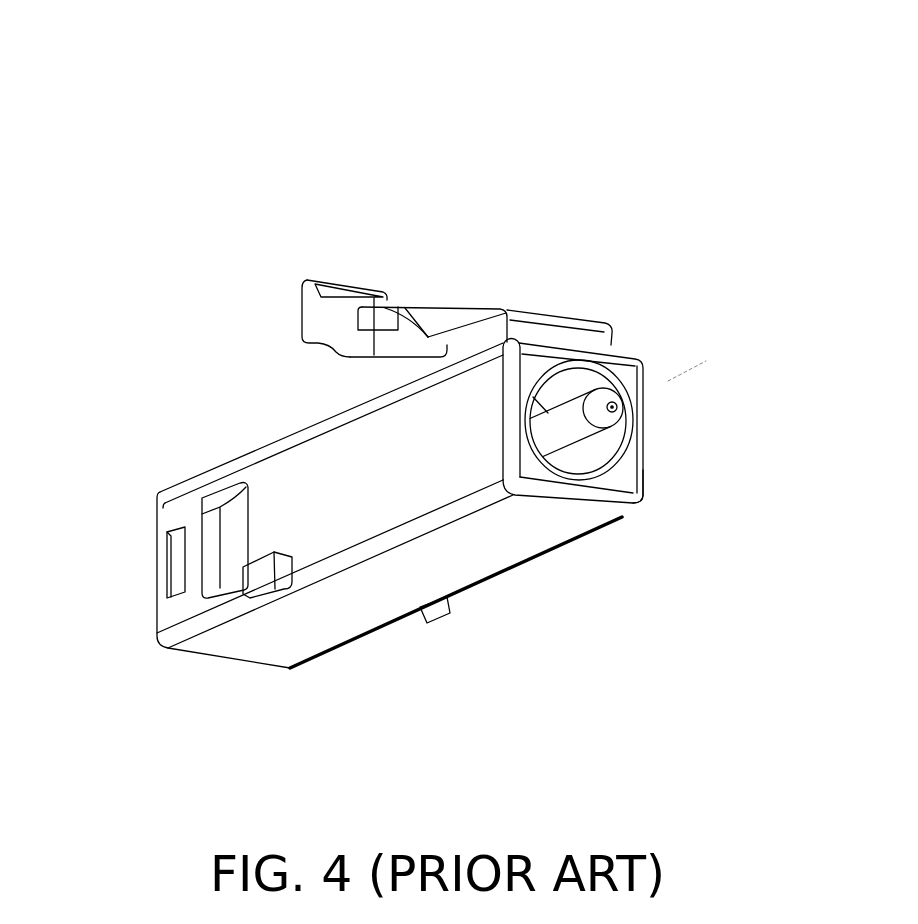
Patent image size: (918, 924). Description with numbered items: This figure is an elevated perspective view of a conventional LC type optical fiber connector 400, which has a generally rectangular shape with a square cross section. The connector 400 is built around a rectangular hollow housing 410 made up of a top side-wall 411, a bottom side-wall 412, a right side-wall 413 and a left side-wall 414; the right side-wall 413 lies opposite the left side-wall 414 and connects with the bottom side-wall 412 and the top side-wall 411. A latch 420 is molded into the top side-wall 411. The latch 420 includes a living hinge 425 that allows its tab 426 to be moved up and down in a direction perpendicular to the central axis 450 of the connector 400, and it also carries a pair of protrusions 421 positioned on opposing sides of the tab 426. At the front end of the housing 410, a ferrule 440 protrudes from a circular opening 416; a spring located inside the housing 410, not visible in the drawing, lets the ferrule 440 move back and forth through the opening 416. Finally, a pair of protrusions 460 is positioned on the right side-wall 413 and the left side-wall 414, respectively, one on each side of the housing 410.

The LC type optical fiber connector 400 is at (470, 108).
The housing 410 is at (495, 637).
The top side-wall 411 is at (572, 346).
The bottom side-wall 412 is at (538, 527).
The right side-wall 413 is at (643, 483).
The left side-wall 414 is at (355, 465).
The circular opening 416 is at (608, 448).
The latch 420 is at (347, 248).
The protrusions 421 is at (367, 318).
The living hinge 425 is at (552, 333).
The tab 426 is at (323, 323).
The ferrule 440 is at (580, 430).
The central axis 450 is at (670, 380).
The protrusions 460 is at (257, 568).